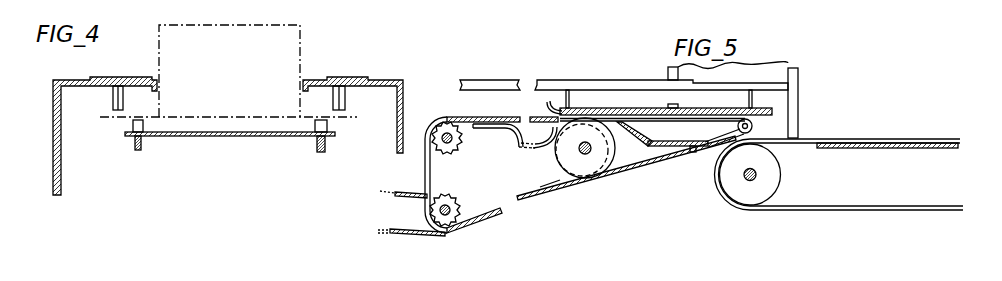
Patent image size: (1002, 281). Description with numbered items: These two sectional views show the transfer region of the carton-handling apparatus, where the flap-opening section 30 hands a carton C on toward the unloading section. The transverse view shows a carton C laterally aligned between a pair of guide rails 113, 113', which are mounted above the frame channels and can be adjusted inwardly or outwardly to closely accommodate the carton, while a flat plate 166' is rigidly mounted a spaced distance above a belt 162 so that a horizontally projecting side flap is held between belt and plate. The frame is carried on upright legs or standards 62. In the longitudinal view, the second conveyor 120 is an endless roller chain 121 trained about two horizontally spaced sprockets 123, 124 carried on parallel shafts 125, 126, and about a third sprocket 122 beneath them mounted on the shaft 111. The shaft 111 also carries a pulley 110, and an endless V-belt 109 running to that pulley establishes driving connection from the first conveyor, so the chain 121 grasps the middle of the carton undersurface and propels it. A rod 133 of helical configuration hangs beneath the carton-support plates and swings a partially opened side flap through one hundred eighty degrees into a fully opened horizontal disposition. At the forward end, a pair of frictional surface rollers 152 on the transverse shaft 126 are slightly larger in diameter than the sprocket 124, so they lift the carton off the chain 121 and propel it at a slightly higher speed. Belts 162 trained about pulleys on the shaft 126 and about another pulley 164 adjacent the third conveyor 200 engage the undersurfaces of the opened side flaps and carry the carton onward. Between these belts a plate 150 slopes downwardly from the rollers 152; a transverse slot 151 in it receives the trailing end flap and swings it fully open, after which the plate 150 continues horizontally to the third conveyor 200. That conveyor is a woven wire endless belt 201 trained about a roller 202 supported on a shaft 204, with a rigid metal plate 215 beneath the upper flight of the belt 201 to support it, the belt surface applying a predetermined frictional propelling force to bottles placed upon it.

In FIG. 4, the carton C is at (300, 23).
In FIG. 4, the guide rail 113 is at (105, 122).
In FIG. 4, the guide rail 113' is at (353, 101).
In FIG. 4, the flat plate 166' is at (206, 100).
In FIG. 5, the flat plate 166' is at (652, 80).
In FIG. 4, the belt 162 is at (316, 151).
In FIG. 5, the belt 162 is at (693, 152).
In FIG. 5, the flap-opening section 30 is at (578, 57).
In FIG. 5, the second conveyor 120 is at (445, 110).
In FIG. 5, the third sprocket 122 is at (448, 226).
In FIG. 5, the sprocket 123 is at (461, 148).
In FIG. 5, the shaft 125 is at (441, 142).
In FIG. 5, the pulley 110 is at (458, 196).
In FIG. 5, the shaft 111 is at (457, 207).
In FIG. 5, the endless V-belt 109 is at (400, 236).
In FIG. 5, the rod 133 is at (510, 144).
In FIG. 5, the sprocket 124 is at (586, 180).
In FIG. 5, the transverse shaft 126 is at (592, 150).
In FIG. 5, the endless roller chain 121 is at (528, 199).
In FIG. 5, the frictional surface roller 152 is at (558, 172).
In FIG. 5, the plate 150 is at (647, 140).
In FIG. 5, the transverse slot 151 is at (674, 150).
In FIG. 5, the pulley 164 is at (753, 126).
In FIG. 5, the upright leg 62 is at (799, 104).
In FIG. 5, the third conveyor 200 is at (935, 136).
In FIG. 5, the woven wire endless belt 201 is at (880, 137).
In FIG. 5, the roller 202 is at (781, 186).
In FIG. 5, the shaft 204 is at (758, 174).
In FIG. 5, the rigid metal plate 215 is at (896, 149).